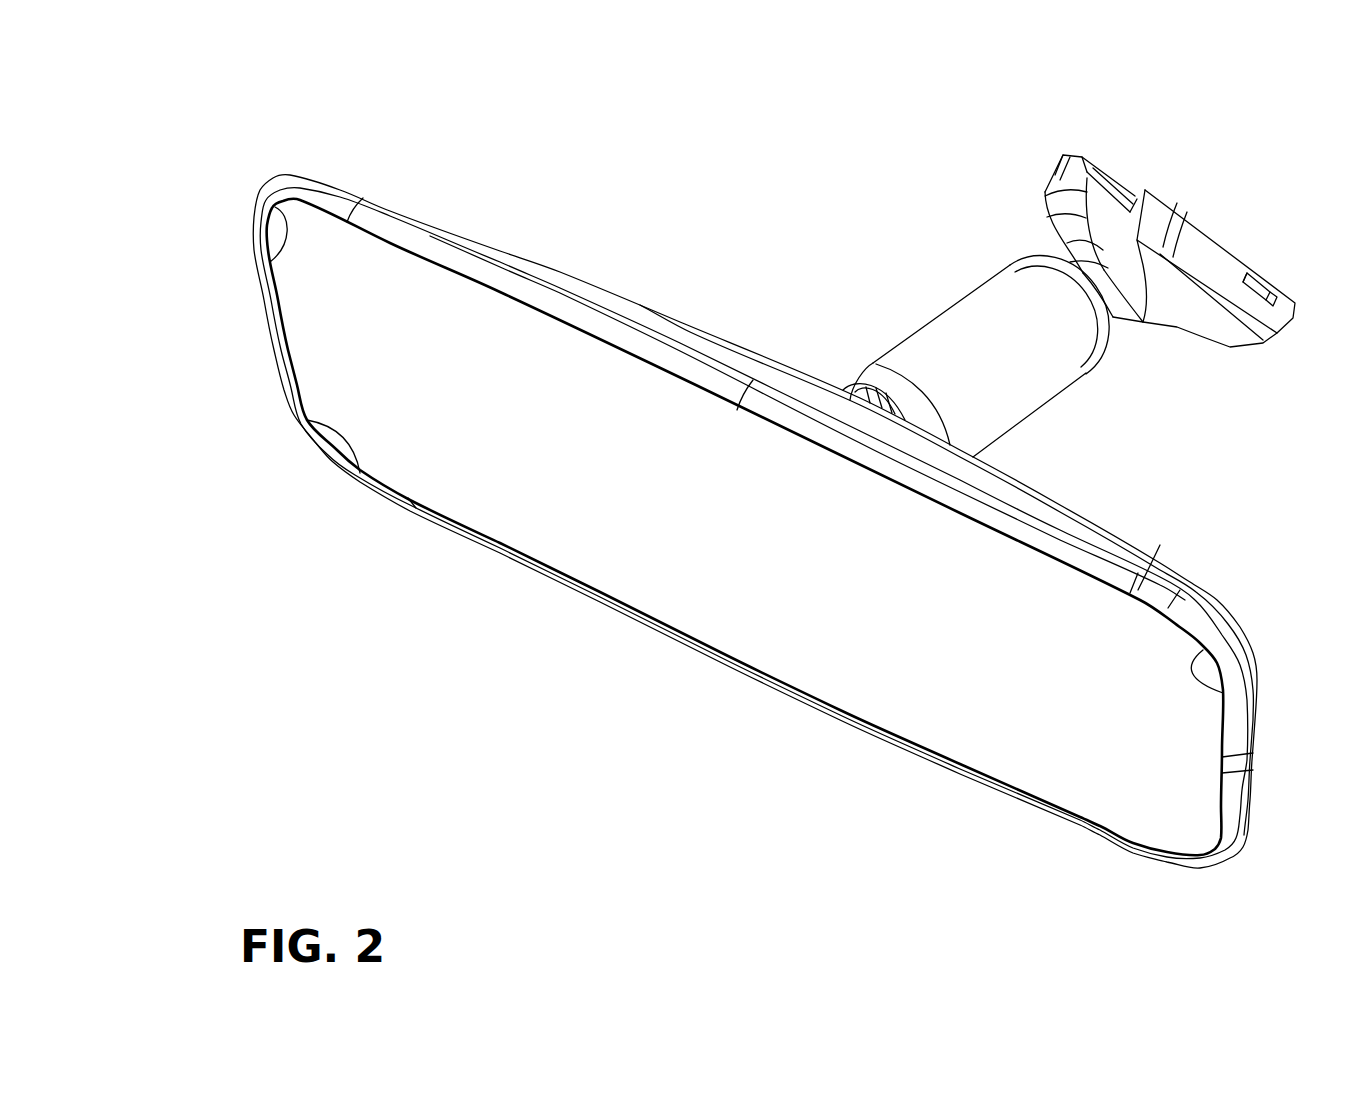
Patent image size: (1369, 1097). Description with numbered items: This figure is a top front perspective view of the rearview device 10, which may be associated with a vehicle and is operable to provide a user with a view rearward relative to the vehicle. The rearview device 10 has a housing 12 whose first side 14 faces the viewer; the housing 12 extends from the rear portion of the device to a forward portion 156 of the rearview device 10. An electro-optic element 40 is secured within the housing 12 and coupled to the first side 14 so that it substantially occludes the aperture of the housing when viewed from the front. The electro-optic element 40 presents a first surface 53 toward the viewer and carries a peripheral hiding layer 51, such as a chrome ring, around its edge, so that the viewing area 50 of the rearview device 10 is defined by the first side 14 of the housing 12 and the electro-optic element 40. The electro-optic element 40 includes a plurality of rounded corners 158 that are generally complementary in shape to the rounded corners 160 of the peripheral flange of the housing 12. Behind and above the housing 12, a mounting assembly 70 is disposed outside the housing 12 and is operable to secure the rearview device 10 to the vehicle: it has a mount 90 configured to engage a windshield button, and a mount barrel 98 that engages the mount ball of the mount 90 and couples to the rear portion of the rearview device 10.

The rearview device 10 is at (669, 165).
The housing 12 is at (690, 328).
The first side 14 is at (913, 748).
The electro-optic element 40 is at (395, 287).
The viewing area 50 is at (1067, 592).
The peripheral hiding layer 51 is at (507, 553).
The first surface 53 is at (741, 532).
The mounting assembly 70 is at (998, 254).
The mount 90 is at (1210, 265).
The mount barrel 98 is at (945, 337).
The forward portion 156 is at (547, 293).
The rounded corners 158 is at (267, 263).
The rounded corners 160 is at (303, 193).